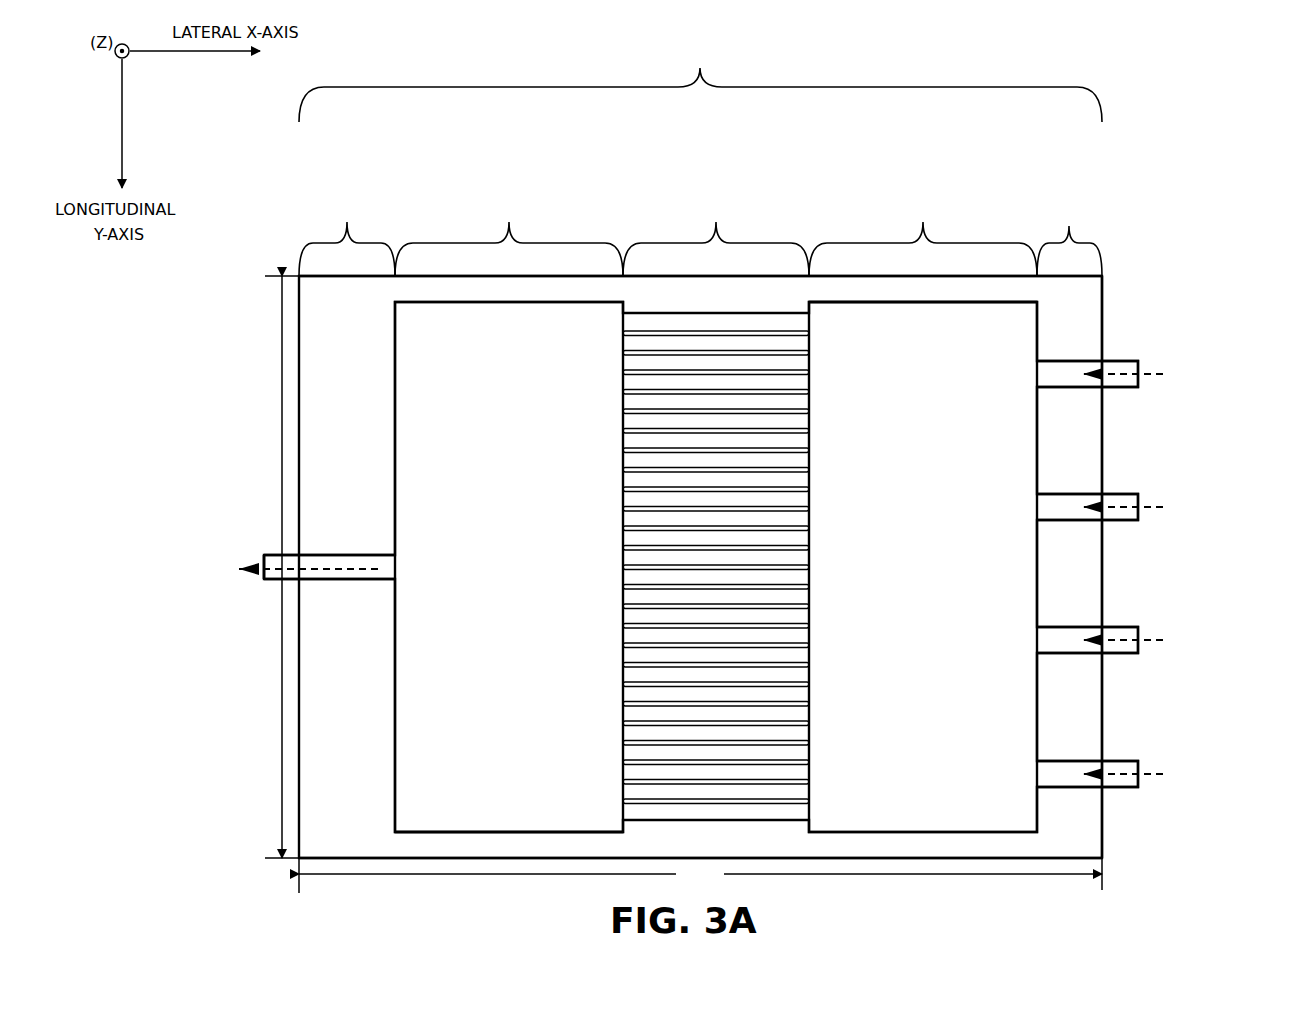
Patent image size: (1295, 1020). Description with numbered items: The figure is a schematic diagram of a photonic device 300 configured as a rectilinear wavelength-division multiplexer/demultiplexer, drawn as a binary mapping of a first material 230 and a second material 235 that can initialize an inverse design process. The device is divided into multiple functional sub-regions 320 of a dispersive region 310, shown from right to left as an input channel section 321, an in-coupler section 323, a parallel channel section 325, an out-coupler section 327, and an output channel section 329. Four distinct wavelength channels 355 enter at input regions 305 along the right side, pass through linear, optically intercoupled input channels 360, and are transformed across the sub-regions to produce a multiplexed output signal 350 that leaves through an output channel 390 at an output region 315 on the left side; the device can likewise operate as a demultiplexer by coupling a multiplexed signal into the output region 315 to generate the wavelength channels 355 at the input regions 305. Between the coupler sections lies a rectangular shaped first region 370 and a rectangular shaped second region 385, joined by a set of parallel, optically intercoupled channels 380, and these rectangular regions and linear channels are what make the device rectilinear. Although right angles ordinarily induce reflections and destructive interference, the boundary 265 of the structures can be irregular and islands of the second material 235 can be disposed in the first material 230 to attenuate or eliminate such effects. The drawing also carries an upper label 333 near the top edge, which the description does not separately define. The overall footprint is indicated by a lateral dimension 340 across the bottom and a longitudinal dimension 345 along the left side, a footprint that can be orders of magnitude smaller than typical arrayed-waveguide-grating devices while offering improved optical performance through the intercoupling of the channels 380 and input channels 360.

The photonic device 300 is at (1226, 72).
The sub-regions 320 is at (700, 81).
The output channel section 329 is at (356, 203).
The out-coupler section 327 is at (509, 203).
The parallel channel section 325 is at (716, 210).
The in-coupler section 323 is at (923, 219).
The input channel section 321 is at (1092, 214).
The top side wall 333 is at (344, 304).
The second material 235 is at (344, 847).
The dispersive region 310 is at (1105, 847).
The first material 230 is at (445, 822).
The boundary 265 is at (922, 304).
The second region 385 is at (528, 544).
The first region 370 is at (921, 544).
The channels 380 is at (757, 813).
The output channel 390 is at (351, 557).
The multiplexed output signal 350 is at (259, 574).
The output region 315 is at (268, 557).
The input channels 360 is at (1063, 372).
The input regions 305 is at (1112, 366).
The wavelength channels 355 is at (1137, 370).
The longitudinal dimension 345 is at (282, 746).
The lateral dimension 340 is at (718, 886).